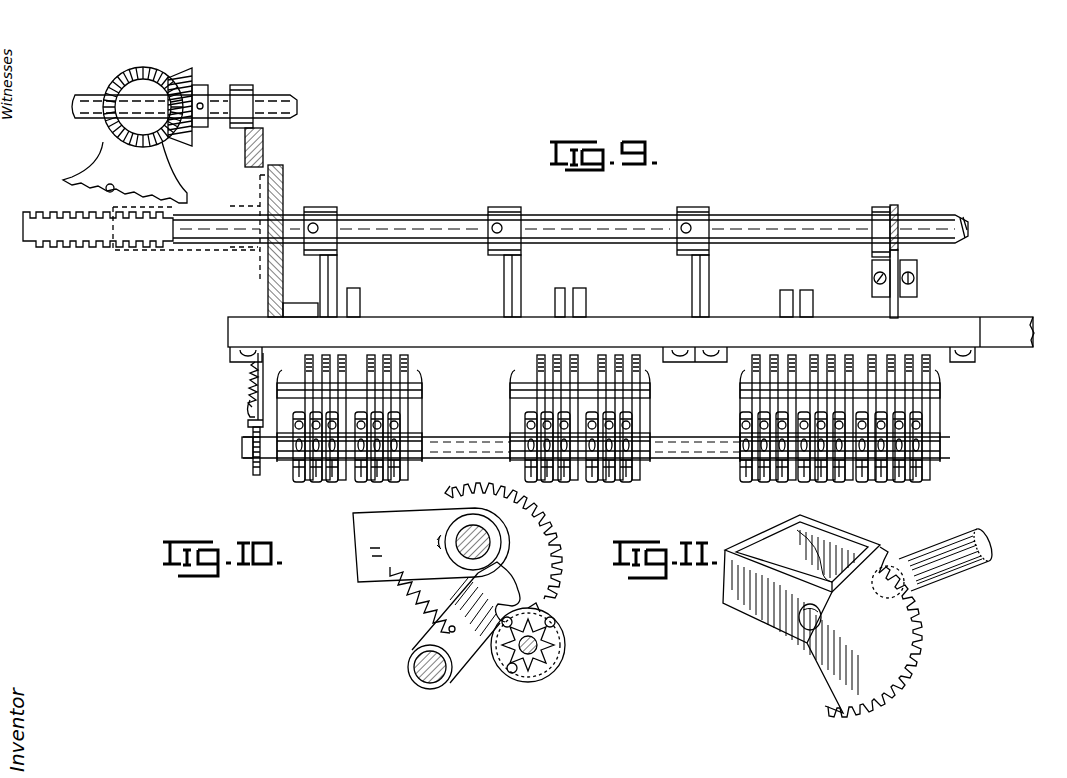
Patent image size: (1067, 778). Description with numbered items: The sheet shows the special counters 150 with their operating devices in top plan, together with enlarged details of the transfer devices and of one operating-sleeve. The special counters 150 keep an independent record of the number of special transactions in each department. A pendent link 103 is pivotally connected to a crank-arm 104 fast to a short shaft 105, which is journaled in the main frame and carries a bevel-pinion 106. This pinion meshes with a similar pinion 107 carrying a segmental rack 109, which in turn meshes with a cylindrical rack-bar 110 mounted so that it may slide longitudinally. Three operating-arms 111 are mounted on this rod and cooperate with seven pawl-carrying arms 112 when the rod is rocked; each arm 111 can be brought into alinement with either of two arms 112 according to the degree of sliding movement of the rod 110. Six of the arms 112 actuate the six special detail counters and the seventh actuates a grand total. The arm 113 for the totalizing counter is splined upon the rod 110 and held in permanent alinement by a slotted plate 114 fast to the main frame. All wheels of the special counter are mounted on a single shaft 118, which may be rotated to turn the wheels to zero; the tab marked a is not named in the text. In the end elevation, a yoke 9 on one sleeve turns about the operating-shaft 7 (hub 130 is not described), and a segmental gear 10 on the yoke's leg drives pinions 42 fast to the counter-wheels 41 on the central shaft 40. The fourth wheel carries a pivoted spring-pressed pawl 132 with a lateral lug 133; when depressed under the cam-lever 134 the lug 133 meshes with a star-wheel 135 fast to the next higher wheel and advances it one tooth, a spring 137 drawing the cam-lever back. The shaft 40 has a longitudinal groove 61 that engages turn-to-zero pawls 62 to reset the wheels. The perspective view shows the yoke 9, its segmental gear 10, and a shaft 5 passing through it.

In FIG. 9, the pendent link 103 is at (263, 140).
In FIG. 9, the crank-arm 104 is at (254, 128).
In FIG. 9, the short shaft 105 is at (281, 95).
In FIG. 9, the bevel-pinion 106 is at (184, 68).
In FIG. 9, the bevel-pinion 107 is at (118, 80).
In FIG. 9, the segmental rack 109 is at (102, 198).
In FIG. 9, the cylindrical rack-bar 110 is at (56, 212).
In FIG. 9, the operating-arms 111 is at (338, 283).
In FIG. 9, the pawl-carrying arms 112 is at (360, 298).
In FIG. 9, the arm 113 is at (917, 277).
In FIG. 9, the slotted plate 114 is at (872, 275).
In FIG. 9, the shaft 118 is at (428, 435).
In FIG. 9, the special counters 150 is at (608, 432).
In FIG. 9, the disc tab a is at (922, 484).
In FIG. 10, the yoke 9 is at (431, 545).
In FIG. 11, the yoke 9 is at (800, 516).
In FIG. 10, the segmental gear 10 is at (484, 524).
In FIG. 11, the segmental gear 10 is at (873, 632).
In FIG. 10, the operating-shaft 7 is at (499, 534).
In FIG. 10, the shaft 130 is at (491, 544).
In FIG. 10, the cam-lever 134 is at (502, 584).
In FIG. 10, the pawl 132 is at (540, 612).
In FIG. 10, the central shaft 40 is at (546, 630).
In FIG. 10, the counter-wheels 41 is at (538, 644).
In FIG. 10, the lug 133 is at (566, 645).
In FIG. 10, the pinions 42 is at (556, 660).
In FIG. 10, the star-wheel 135 is at (557, 670).
In FIG. 10, the longitudinal groove 61 is at (453, 667).
In FIG. 10, the turn-to-zero pawls 62 is at (500, 672).
In FIG. 10, the spring 137 is at (392, 598).
In FIG. 11, the shaft 5 is at (950, 538).